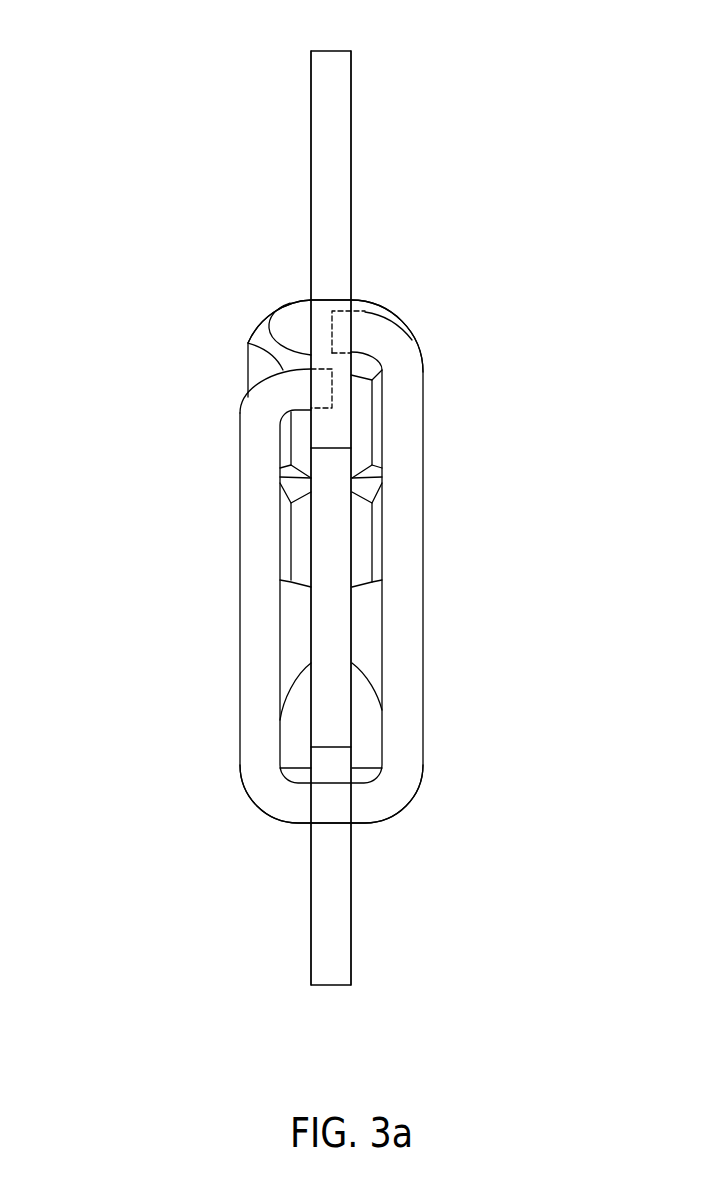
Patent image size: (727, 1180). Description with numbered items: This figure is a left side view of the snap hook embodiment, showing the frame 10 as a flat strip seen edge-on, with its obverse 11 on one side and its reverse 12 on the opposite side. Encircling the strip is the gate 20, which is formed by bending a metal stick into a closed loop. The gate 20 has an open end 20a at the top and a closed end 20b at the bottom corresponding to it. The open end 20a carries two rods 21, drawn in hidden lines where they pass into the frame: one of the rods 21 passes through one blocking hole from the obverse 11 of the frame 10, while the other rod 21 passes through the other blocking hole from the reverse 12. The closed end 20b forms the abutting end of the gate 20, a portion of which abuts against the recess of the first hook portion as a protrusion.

The frame 10 is at (353, 110).
The obverse 11 is at (352, 228).
The reverse 12 is at (310, 250).
The gate 20 is at (424, 605).
The open end 20a is at (240, 411).
The closed end 20b is at (247, 793).
The rods 21 is at (332, 323).